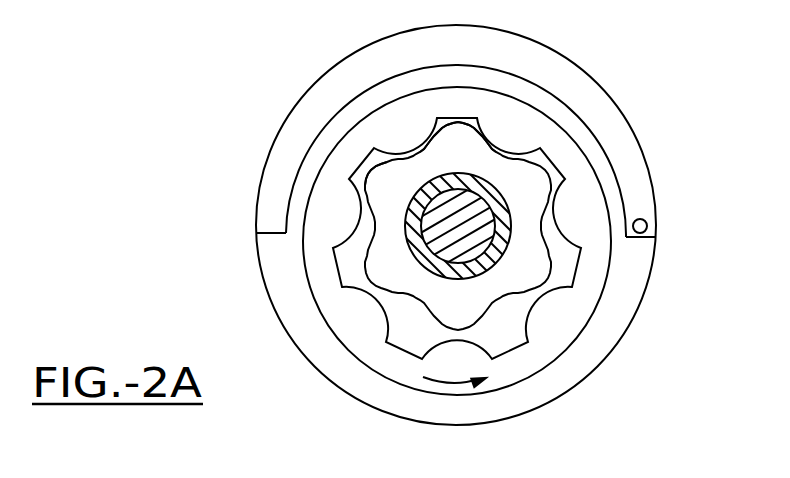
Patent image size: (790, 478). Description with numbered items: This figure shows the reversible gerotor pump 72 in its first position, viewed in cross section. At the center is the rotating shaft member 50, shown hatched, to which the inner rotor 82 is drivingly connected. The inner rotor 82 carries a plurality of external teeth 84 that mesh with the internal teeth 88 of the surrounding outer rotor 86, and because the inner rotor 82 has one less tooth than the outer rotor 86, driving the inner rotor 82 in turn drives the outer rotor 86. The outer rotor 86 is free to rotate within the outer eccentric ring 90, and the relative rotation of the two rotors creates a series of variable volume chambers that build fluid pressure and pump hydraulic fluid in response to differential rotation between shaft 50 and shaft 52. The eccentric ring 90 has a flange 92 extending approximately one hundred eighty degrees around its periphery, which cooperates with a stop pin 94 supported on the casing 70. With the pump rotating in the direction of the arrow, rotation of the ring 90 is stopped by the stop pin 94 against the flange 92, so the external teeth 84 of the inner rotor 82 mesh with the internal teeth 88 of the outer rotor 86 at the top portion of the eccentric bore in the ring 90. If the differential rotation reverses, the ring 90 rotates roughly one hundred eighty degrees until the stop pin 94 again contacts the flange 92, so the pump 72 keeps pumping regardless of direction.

The rotating shaft member 50 is at (432, 265).
The shaft 52 is at (433, 238).
The casing 70 is at (341, 63).
The reversible gerotor pump 72 is at (283, 108).
The inner rotor 82 is at (540, 182).
The external teeth 84 is at (458, 120).
The outer rotor 86 is at (575, 330).
The internal teeth 88 is at (392, 343).
The outer eccentric ring 90 is at (568, 115).
The flange 92 is at (636, 270).
The stop pin 94 is at (647, 227).